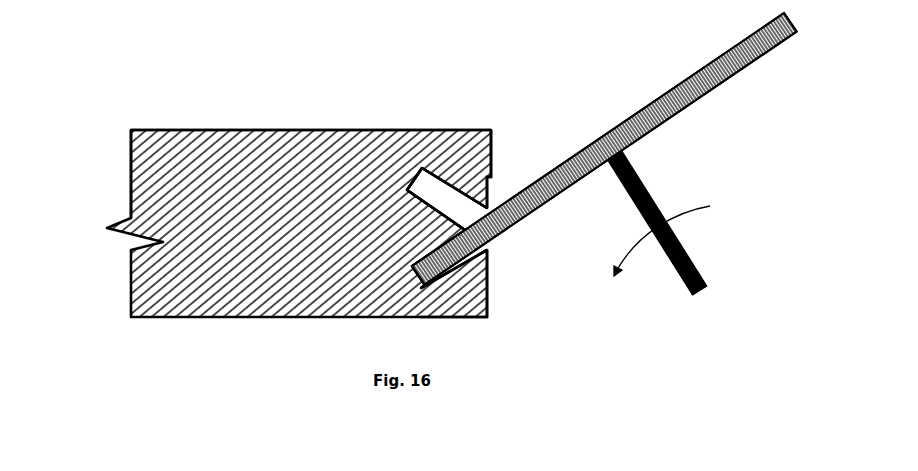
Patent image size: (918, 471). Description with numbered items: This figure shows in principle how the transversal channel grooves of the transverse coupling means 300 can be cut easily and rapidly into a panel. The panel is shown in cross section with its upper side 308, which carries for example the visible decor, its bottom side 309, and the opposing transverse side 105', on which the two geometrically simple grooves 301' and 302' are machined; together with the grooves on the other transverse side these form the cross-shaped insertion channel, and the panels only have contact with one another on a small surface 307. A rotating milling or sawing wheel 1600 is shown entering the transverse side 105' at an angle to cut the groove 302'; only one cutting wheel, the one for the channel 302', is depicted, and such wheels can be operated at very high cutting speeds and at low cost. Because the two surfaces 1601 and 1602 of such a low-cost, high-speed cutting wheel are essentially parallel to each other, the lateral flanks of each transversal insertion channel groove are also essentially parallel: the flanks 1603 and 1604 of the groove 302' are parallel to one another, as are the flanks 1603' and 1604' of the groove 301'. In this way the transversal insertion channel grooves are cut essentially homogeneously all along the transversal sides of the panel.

The opposing transverse side 105' is at (80, 174).
The transverse coupling means 300 is at (292, 119).
The groove 301' is at (457, 115).
The groove 302' is at (447, 332).
The small surface 307 is at (491, 146).
The upper side 308 is at (464, 130).
The bottom side 309 is at (478, 318).
The rotating milling or sawing wheel 1600 is at (715, 87).
The surface of the cutting wheel 1601 is at (687, 78).
The surface of the cutting wheel 1602 is at (680, 112).
The lateral flank 1603 is at (512, 294).
The lateral flank 1603' is at (446, 148).
The lateral flank 1604 is at (340, 273).
The lateral flank 1604' is at (382, 124).